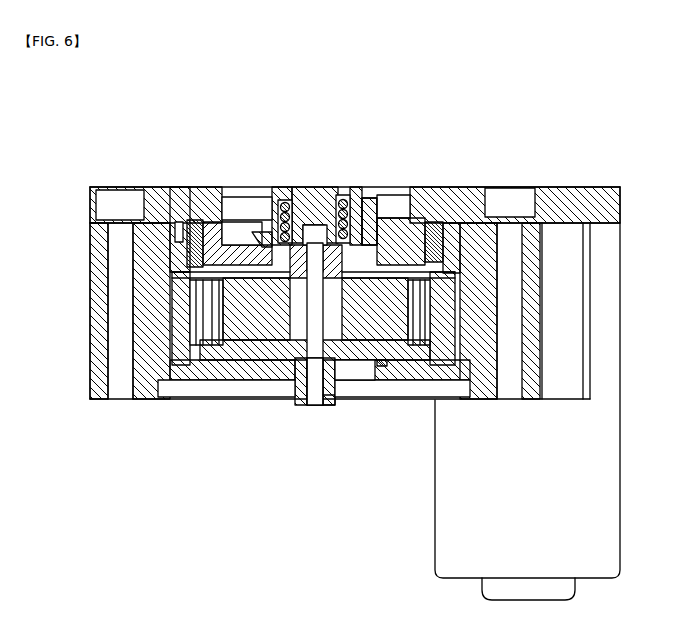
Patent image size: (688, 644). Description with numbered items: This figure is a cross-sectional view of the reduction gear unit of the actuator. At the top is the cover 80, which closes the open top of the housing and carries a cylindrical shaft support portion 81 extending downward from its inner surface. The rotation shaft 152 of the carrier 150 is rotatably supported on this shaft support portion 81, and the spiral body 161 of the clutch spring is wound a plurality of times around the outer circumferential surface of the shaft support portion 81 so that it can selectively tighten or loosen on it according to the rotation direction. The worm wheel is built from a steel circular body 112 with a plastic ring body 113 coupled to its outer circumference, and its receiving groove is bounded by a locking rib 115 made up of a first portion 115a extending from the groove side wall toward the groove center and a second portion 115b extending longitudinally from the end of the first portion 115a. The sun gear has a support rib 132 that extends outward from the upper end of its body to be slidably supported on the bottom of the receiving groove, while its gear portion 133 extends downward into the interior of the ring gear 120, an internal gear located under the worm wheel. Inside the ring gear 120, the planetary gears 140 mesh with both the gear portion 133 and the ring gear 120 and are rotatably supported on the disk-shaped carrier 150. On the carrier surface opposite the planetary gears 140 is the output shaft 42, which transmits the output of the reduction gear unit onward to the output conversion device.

The cover 80 is at (462, 190).
The shaft support portion 81 is at (318, 200).
The body 161 is at (287, 205).
The locking rib 115 is at (374, 147).
The first portion 115a is at (427, 224).
The second portion 115b is at (368, 200).
The ring body 113 is at (190, 222).
The circular body 112 is at (207, 222).
The support rib 132 is at (265, 238).
The ring gear 120 is at (177, 320).
The planetary gear 140 is at (238, 335).
The gear portion 133 is at (292, 330).
The rotation shaft 152 is at (317, 378).
The output shaft 42 is at (332, 405).
The carrier 150 is at (399, 355).